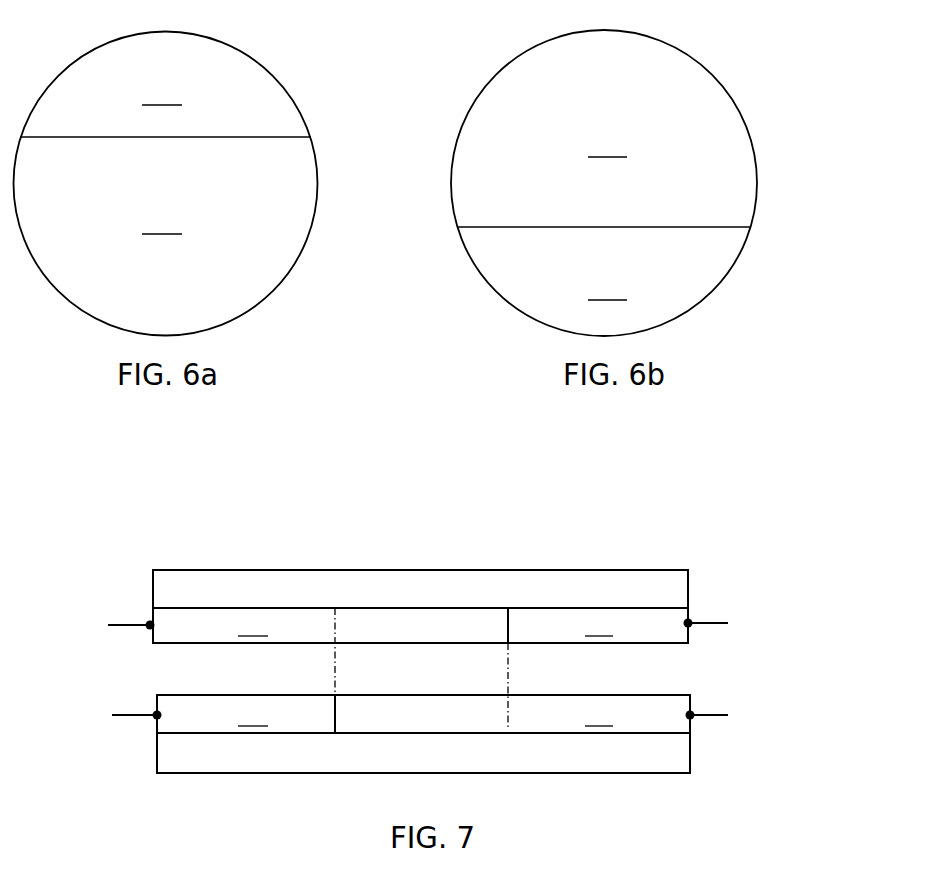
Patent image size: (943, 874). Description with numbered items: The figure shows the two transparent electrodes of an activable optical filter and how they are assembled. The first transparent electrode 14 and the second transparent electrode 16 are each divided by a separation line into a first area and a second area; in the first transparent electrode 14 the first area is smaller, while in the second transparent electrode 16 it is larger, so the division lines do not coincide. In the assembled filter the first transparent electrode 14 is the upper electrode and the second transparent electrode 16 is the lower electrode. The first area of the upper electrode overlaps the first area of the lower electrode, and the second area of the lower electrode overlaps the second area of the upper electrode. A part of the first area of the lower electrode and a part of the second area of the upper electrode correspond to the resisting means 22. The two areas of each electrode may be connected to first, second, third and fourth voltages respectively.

In FIG. 6A, the first transparent electrode 14 is at (300, 94).
In FIG. 7, the first transparent electrode 14 is at (595, 582).
In FIG. 6B, the second transparent electrode 16 is at (732, 88).
In FIG. 7, the second transparent electrode 16 is at (620, 752).
In FIG. 7, the resisting means 22 is at (363, 708).